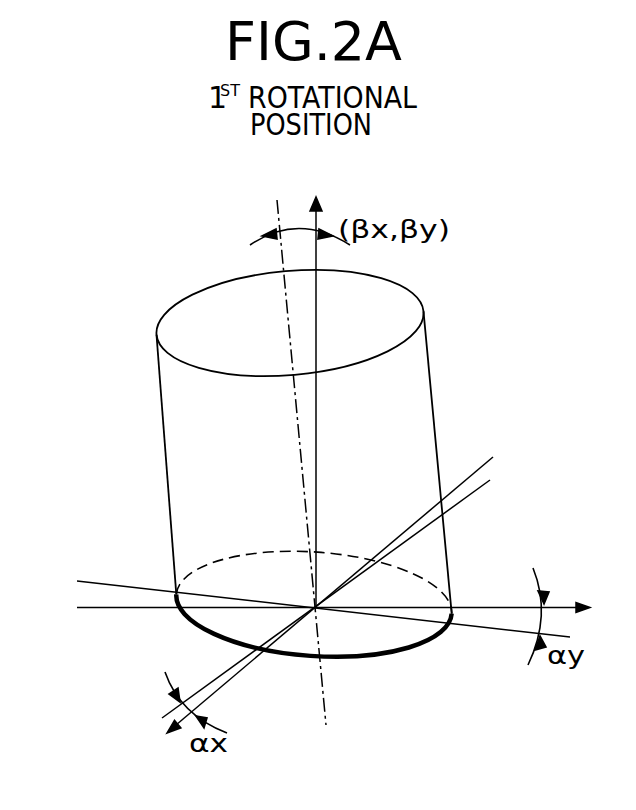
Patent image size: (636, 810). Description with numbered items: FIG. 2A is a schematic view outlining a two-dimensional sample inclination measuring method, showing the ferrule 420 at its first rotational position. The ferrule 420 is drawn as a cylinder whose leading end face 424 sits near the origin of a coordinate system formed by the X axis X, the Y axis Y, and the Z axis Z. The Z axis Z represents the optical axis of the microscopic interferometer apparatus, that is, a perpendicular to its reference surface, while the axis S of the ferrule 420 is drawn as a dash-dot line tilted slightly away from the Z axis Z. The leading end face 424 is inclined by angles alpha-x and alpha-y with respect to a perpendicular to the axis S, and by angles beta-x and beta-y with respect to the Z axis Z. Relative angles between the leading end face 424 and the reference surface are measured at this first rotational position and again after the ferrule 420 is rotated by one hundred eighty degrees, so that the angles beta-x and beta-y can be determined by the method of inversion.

The ferrule 420 is at (423, 391).
The leading end face 424 is at (360, 627).
The axis S is at (297, 400).
The X axis X is at (320, 607).
The Y axis Y is at (342, 608).
The Z axis Z is at (316, 390).